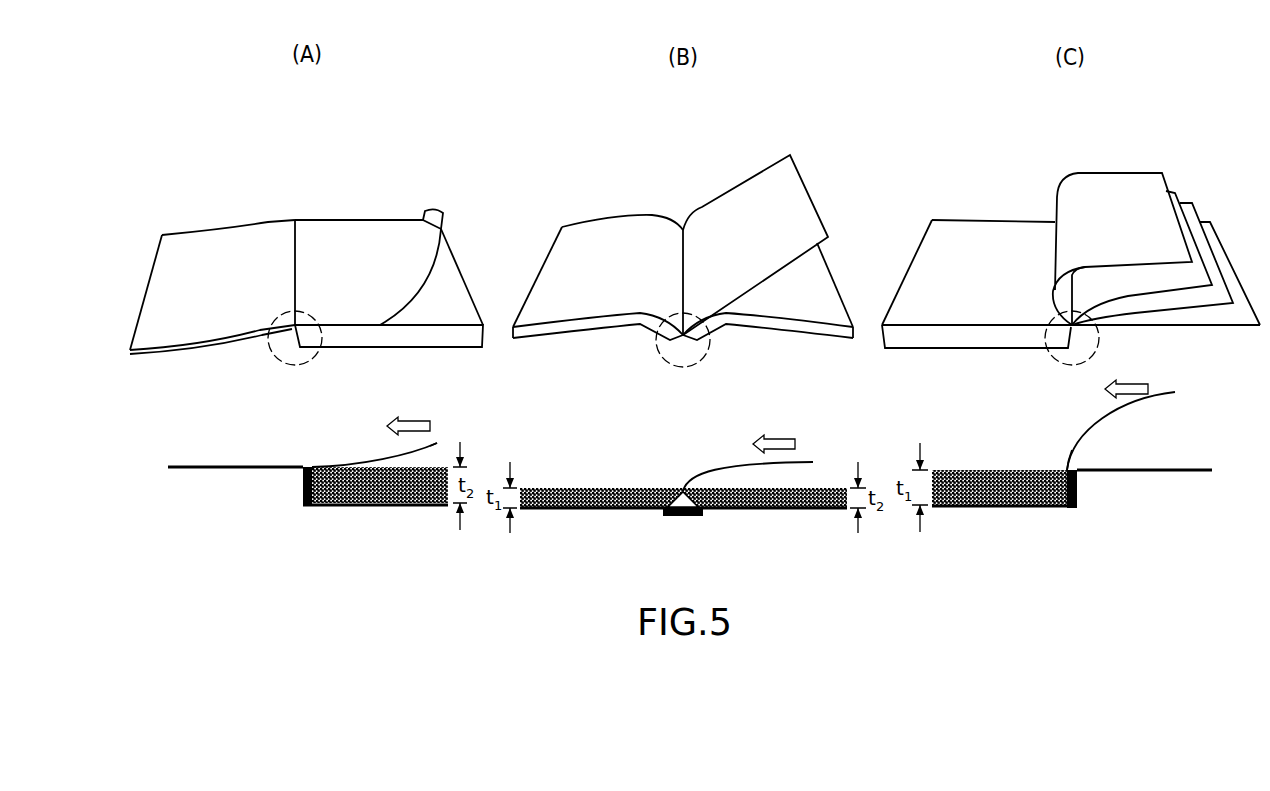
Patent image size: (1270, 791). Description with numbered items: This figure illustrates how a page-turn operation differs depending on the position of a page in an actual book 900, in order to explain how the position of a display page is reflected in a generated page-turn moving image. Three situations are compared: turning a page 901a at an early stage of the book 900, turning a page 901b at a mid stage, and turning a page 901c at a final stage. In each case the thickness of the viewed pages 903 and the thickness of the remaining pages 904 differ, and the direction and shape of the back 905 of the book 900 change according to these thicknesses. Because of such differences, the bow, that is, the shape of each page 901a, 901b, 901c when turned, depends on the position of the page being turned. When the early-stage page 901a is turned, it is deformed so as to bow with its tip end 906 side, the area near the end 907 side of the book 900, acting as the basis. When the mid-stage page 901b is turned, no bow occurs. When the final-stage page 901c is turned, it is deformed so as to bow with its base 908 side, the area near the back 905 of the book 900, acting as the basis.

The actual book 900 is at (296, 150).
The page at early stage 901a is at (380, 230).
The page at mid stage 901b is at (758, 168).
The page at final stage 901c is at (1127, 173).
The viewed pages 903 is at (588, 488).
The remaining pages 904 is at (380, 507).
The back 905 is at (288, 341).
The tip end 906 is at (437, 443).
The end 907 is at (484, 332).
The base 908 is at (1072, 450).